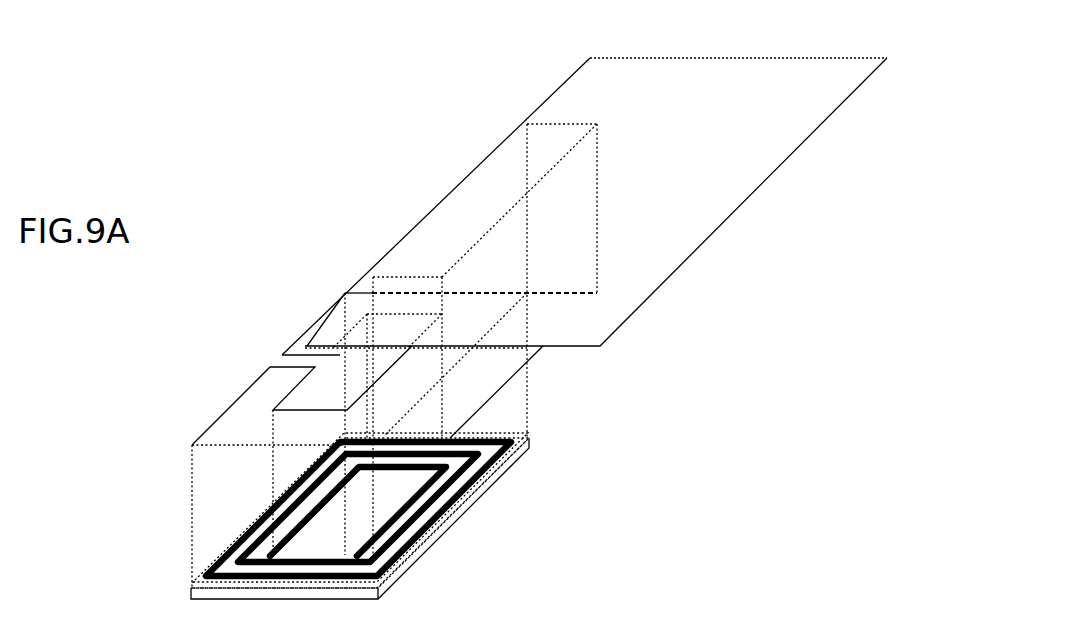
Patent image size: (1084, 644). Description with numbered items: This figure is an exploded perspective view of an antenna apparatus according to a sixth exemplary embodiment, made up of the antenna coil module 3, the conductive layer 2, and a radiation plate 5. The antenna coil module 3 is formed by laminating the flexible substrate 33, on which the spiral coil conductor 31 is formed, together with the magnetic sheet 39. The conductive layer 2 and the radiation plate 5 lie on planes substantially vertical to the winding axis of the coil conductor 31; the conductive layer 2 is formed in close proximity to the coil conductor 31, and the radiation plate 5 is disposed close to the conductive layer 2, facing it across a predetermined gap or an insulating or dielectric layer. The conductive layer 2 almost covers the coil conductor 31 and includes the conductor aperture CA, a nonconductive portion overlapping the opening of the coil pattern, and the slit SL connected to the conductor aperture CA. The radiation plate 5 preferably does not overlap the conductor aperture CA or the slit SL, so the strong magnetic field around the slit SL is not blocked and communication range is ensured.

The radiation plate 5 is at (540, 193).
The slit SL is at (261, 357).
The conductor aperture CA is at (327, 360).
The conductive layer 2 is at (477, 393).
The antenna coil module 3 is at (383, 512).
The coil conductor 31 is at (311, 510).
The flexible substrate 33 is at (205, 579).
The magnetic sheet 39 is at (376, 599).